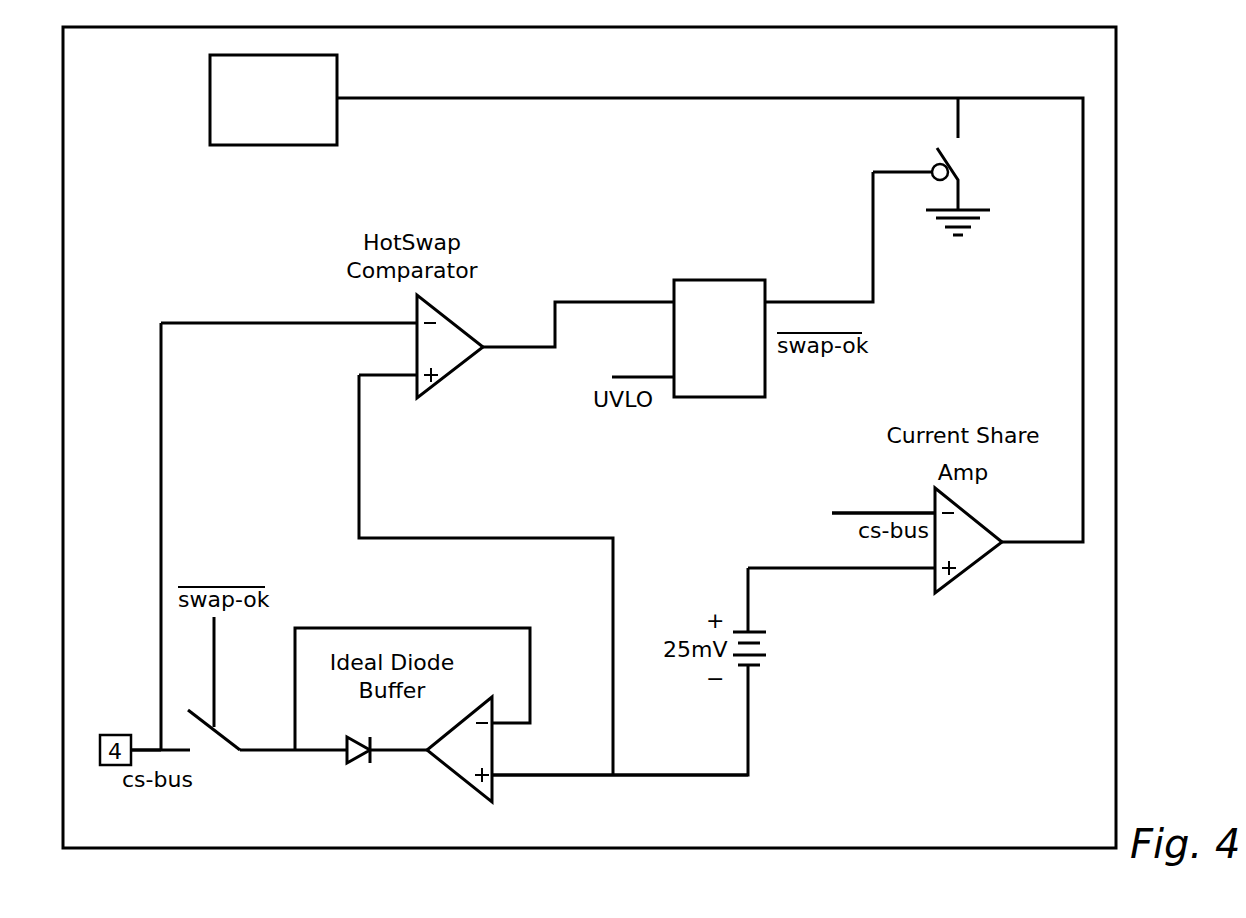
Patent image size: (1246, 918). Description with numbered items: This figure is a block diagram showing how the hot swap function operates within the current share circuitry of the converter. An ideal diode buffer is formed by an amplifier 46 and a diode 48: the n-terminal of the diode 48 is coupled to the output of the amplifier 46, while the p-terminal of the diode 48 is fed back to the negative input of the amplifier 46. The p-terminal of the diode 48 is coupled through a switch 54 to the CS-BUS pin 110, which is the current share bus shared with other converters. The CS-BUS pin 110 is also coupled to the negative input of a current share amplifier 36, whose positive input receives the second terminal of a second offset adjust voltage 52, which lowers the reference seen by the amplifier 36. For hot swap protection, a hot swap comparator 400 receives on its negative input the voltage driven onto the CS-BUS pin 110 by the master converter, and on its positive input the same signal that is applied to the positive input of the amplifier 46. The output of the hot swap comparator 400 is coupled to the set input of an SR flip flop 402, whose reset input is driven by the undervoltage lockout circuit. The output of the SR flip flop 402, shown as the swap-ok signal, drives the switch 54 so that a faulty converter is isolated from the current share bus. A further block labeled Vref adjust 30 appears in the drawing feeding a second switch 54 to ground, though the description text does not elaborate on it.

The Vref adjust circuit 30 is at (320, 131).
The switch 54 is at (950, 153).
The hot swap comparator 400 is at (447, 355).
The SR flip flop 402 is at (717, 280).
The CS-BUS pin 110 is at (930, 512).
The current share amplifier 36 is at (965, 552).
The second offset adjust voltage 52 is at (766, 645).
The diode 48 is at (360, 753).
The amplifier 46 is at (453, 755).